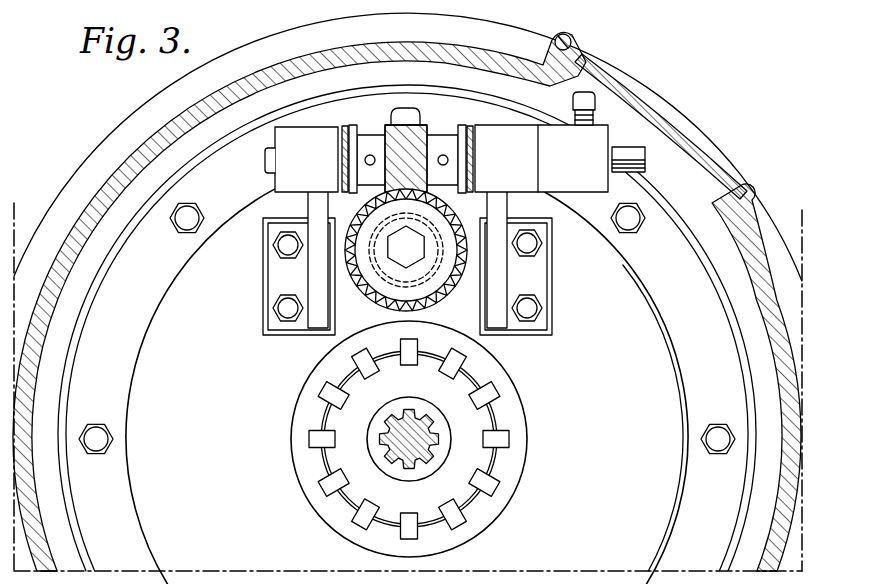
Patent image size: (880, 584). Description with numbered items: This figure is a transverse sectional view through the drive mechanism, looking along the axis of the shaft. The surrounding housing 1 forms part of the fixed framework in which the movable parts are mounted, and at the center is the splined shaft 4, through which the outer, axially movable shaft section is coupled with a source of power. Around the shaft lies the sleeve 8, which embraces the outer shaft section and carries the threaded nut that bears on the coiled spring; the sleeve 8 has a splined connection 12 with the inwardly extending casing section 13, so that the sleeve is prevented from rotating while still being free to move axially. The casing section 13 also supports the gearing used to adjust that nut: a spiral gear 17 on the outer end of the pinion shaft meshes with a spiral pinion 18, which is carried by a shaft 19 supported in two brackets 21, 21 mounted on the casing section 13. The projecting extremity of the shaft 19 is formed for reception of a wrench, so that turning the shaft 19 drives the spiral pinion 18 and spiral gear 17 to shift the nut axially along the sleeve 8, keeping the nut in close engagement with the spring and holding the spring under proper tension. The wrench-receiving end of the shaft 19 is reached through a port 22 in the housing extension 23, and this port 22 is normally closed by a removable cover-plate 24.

The housing 1 is at (546, 23).
The splined shaft 4 is at (437, 433).
The sleeve 8 is at (504, 438).
The splined connection 12 is at (484, 507).
The casing section 13 is at (613, 391).
The spiral gear 17 is at (454, 285).
The spiral pinion 18 is at (423, 126).
The shaft 19 is at (265, 162).
The brackets 21 is at (270, 287).
The port 22 is at (720, 168).
The housing extension 23 is at (158, 128).
The cover-plate 24 is at (630, 94).